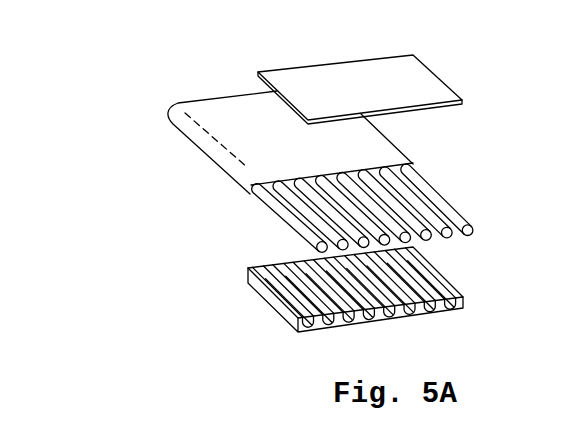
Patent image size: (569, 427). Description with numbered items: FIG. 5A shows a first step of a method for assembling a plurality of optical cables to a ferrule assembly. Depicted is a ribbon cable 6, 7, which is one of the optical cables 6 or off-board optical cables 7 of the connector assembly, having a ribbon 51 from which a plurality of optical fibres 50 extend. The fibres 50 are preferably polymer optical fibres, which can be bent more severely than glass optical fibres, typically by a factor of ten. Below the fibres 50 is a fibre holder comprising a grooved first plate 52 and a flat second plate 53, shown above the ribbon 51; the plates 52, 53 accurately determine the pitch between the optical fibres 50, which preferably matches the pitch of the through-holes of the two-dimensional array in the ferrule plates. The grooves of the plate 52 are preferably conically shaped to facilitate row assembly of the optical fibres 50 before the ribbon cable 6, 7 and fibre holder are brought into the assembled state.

The optical cable 6 is at (290, 196).
The off-board optical cable 7 is at (172, 185).
The optical fibres 50 is at (437, 223).
The ribbon 51 is at (210, 112).
The grooved first plate 52 is at (283, 316).
The flat second plate 53 is at (425, 83).